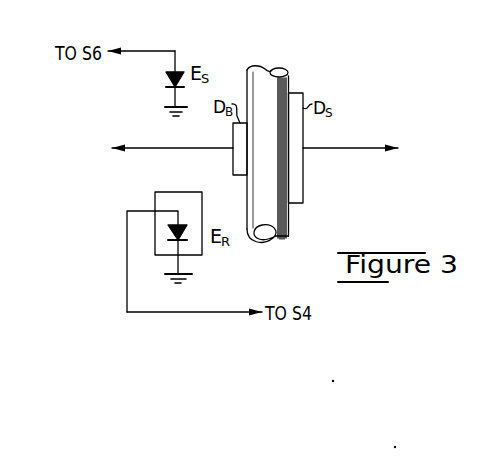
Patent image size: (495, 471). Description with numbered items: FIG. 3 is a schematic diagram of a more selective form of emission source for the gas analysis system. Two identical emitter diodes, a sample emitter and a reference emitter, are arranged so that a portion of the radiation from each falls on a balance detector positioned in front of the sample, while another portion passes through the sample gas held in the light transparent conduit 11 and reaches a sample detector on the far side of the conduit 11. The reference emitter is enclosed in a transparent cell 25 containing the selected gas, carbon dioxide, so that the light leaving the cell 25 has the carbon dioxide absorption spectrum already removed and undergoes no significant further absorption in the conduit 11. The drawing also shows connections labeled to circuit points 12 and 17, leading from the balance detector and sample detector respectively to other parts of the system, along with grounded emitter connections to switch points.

The light transparent conduit 11 is at (288, 67).
The circuit 12 (connection) 12 is at (149, 150).
The circuit 17 (connection) 17 is at (373, 146).
The transparent cell 25 is at (198, 192).